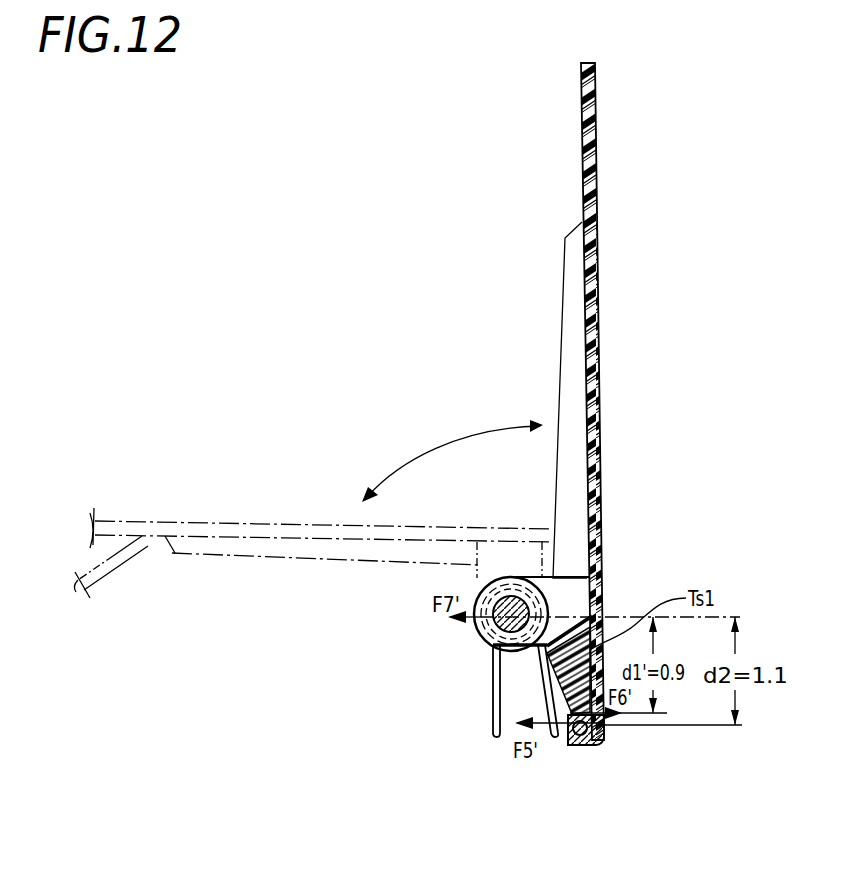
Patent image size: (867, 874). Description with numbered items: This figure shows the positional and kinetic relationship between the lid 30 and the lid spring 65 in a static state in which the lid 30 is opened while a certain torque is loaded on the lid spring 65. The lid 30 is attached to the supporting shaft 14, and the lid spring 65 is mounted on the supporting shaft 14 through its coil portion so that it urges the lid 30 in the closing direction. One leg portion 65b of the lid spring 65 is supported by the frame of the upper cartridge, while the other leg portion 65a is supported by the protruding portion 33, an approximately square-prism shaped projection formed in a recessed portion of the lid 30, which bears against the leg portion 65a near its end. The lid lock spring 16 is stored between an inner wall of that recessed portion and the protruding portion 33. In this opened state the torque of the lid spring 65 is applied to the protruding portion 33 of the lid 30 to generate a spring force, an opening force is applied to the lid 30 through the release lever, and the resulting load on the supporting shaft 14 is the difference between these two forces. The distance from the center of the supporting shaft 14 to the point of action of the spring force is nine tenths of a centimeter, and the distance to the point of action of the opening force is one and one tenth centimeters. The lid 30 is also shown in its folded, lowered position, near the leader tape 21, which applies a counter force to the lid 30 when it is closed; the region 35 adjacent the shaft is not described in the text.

The lid 30 is at (604, 356).
The leader tape 21 is at (117, 562).
The supporting shaft 14 is at (500, 578).
The bracket block 35 is at (567, 583).
The lid spring 65 is at (475, 635).
The leg portion 65a is at (555, 738).
The leg portion 65b is at (493, 705).
The protruding portion 33 is at (563, 744).
The lid lock spring 16 is at (605, 745).